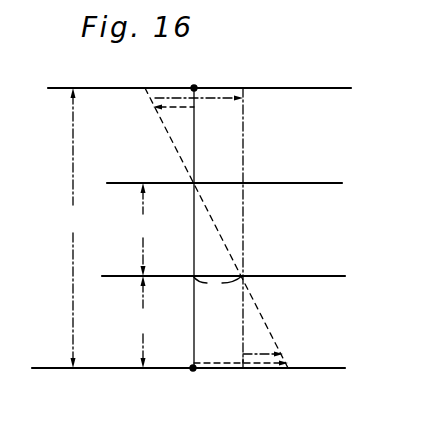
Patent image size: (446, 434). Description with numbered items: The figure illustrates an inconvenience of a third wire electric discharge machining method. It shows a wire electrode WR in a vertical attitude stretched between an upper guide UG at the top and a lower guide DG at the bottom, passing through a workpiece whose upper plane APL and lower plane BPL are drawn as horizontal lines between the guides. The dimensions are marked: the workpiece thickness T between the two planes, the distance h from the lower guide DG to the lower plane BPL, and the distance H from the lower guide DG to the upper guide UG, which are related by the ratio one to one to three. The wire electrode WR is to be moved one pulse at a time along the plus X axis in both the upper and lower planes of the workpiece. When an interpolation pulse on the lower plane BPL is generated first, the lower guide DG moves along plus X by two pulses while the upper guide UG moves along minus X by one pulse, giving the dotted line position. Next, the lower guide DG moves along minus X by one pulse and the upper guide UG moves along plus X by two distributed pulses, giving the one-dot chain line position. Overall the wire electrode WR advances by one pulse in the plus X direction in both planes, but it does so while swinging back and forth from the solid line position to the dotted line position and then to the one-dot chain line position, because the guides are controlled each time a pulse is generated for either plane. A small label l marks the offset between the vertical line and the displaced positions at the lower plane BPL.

The upper guide UG is at (199, 77).
The upper plane of the workpiece APL is at (325, 183).
The lower plane of the workpiece BPL is at (320, 276).
The lower guide DG is at (188, 378).
The wire electrode WR is at (186, 355).
The distance from the lower guide to the upper guide H is at (72, 228).
The workpiece thickness T is at (144, 229).
The distance from the lower guide to the lower plane of the workpiece h is at (143, 322).
The offset length l is at (217, 286).